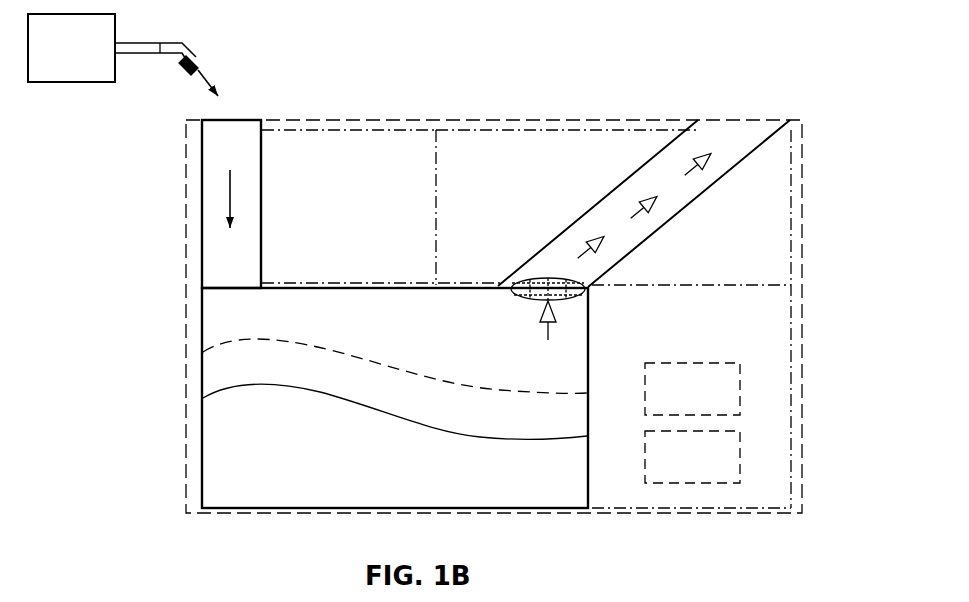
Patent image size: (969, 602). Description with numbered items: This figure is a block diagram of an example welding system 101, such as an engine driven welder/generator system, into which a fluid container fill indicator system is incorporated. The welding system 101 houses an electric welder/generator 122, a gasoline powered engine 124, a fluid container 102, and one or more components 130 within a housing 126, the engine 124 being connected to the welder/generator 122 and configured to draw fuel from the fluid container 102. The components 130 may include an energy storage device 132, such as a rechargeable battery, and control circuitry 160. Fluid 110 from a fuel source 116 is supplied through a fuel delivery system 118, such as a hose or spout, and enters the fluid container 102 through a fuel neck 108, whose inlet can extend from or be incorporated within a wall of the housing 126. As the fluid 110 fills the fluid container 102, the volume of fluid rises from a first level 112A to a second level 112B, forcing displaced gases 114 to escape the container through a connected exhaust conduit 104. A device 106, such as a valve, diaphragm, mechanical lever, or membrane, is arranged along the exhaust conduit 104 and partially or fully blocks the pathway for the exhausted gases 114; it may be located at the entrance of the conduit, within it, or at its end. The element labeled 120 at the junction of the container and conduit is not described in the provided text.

The welding system 101 is at (668, 48).
The fluid container 102 is at (395, 398).
The exhaust conduit 104 is at (609, 194).
The device 106 is at (583, 294).
The fuel neck 108 is at (201, 205).
The fluid 110 is at (217, 75).
The first level 112A is at (292, 393).
The second level 112B is at (332, 345).
The gases 114 is at (534, 326).
The fuel source 116 is at (71, 48).
The fuel delivery system 118 is at (186, 45).
The sensor 120 is at (541, 278).
The electric welder/generator 122 is at (344, 127).
The gasoline powered engine 124 is at (529, 127).
The housing 126 is at (806, 256).
The components 130 is at (691, 319).
The energy storage device 132 is at (692, 389).
The control circuitry 160 is at (692, 457).